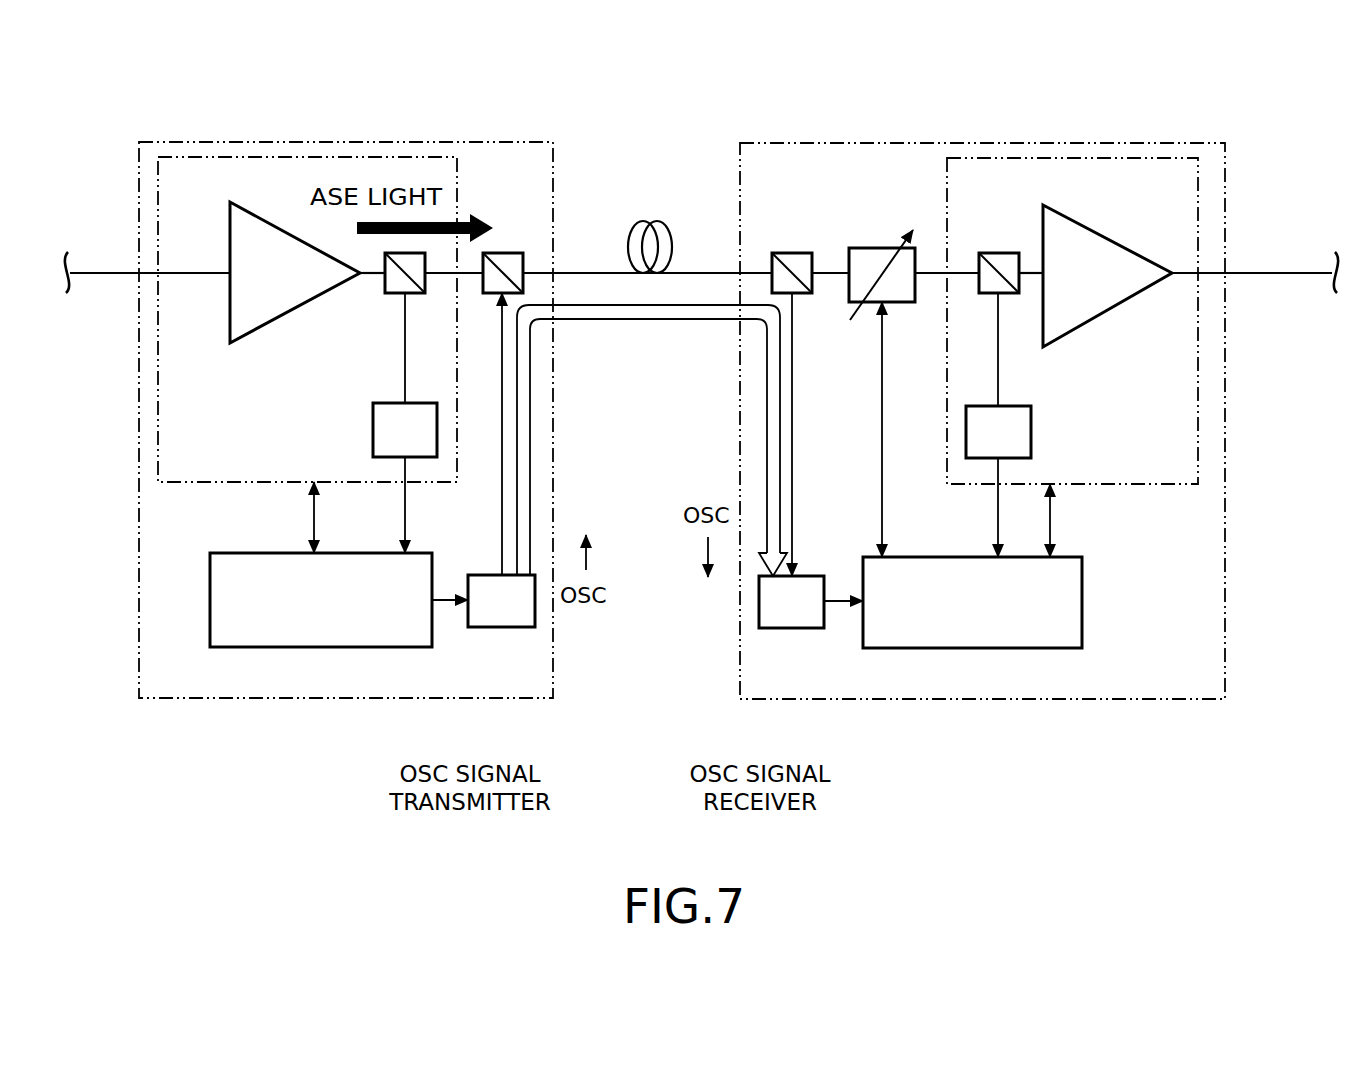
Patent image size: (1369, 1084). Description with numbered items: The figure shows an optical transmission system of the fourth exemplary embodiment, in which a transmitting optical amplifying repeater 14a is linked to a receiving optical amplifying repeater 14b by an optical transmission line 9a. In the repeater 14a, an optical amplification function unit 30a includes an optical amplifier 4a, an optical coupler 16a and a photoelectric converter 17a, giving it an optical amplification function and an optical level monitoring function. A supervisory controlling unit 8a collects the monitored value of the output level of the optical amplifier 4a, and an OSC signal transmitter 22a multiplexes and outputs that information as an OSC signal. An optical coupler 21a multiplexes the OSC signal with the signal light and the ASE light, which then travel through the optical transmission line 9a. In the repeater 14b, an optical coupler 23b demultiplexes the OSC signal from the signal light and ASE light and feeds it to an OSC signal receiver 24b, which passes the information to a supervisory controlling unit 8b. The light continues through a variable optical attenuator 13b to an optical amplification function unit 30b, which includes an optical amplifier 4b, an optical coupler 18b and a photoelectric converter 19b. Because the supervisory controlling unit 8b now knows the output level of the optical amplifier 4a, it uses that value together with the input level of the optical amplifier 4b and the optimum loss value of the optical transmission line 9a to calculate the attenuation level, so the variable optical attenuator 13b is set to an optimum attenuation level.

The optical amplifying repeater 14a is at (360, 142).
The optical amplifying repeater 14b is at (1128, 143).
The optical amplification function unit 30a is at (243, 482).
The optical amplification function unit 30b is at (1165, 483).
The optical amplifier 4a is at (230, 232).
The optical amplifier 4b is at (1100, 233).
The optical coupler 16a is at (393, 293).
The photoelectric converter 17a is at (373, 427).
The optical coupler 21a is at (507, 253).
The OSC signal transmitter 22a is at (488, 627).
The supervisory controlling unit 8a is at (274, 647).
The optical transmission line 9a is at (593, 273).
The optical coupler 23b is at (800, 253).
The variable optical attenuator 13b is at (862, 248).
The optical coupler 18b is at (1003, 253).
The photoelectric converter 19b is at (1031, 420).
The OSC signal receiver 24b is at (778, 628).
The supervisory controlling unit 8b is at (938, 648).